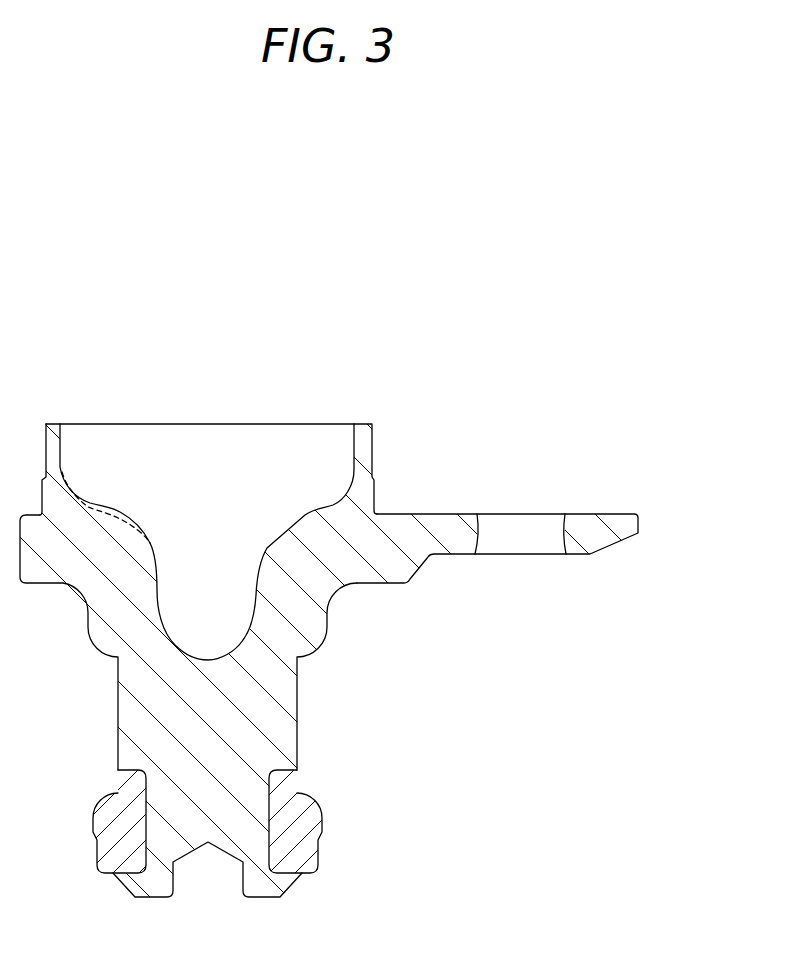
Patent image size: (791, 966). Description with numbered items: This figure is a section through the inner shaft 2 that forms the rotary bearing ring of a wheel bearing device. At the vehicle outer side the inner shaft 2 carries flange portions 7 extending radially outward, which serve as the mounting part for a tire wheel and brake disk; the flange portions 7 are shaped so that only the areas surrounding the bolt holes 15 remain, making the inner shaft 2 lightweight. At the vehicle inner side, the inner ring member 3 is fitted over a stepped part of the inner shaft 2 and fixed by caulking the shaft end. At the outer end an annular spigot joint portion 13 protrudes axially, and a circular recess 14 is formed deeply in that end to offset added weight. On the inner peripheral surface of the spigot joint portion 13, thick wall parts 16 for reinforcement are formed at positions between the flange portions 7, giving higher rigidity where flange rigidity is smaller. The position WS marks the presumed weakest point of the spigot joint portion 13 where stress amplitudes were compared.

The inner shaft 2 is at (263, 708).
The inner ring member 3 is at (290, 822).
The flange portions 7 is at (433, 523).
The spigot joint portion 13 is at (362, 440).
The recess 14 is at (225, 540).
The bolt holes 15 is at (517, 528).
The thick wall parts 16 is at (114, 507).
The position of presumed weakest strength WS is at (333, 503).